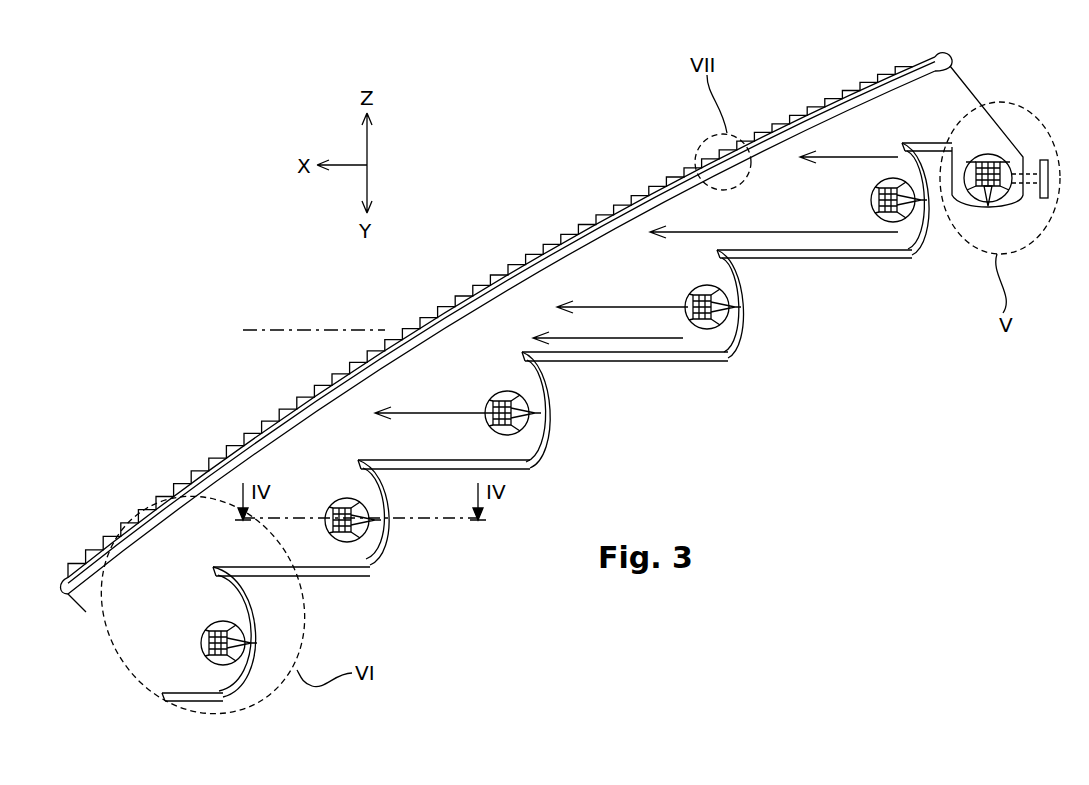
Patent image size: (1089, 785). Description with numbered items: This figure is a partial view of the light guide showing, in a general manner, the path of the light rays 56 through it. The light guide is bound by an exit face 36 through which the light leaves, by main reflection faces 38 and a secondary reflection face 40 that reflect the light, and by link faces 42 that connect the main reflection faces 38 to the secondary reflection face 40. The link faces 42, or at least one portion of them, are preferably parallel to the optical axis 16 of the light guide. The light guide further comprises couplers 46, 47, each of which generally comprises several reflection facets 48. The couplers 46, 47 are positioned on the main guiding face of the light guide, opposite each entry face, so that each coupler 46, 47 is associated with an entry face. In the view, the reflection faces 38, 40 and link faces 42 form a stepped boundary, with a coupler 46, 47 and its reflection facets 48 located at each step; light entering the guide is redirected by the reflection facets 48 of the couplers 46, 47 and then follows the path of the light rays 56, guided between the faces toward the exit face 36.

The optical axis 16 is at (263, 333).
The exit face 36 is at (849, 78).
The main reflection faces 38 is at (557, 422).
The secondary reflection face 40 is at (1013, 117).
The link faces 42 is at (673, 363).
The coupler 46 is at (626, 357).
The coupler 47 is at (188, 632).
The reflection facets 48 is at (518, 388).
The path of the light rays 56 is at (853, 154).